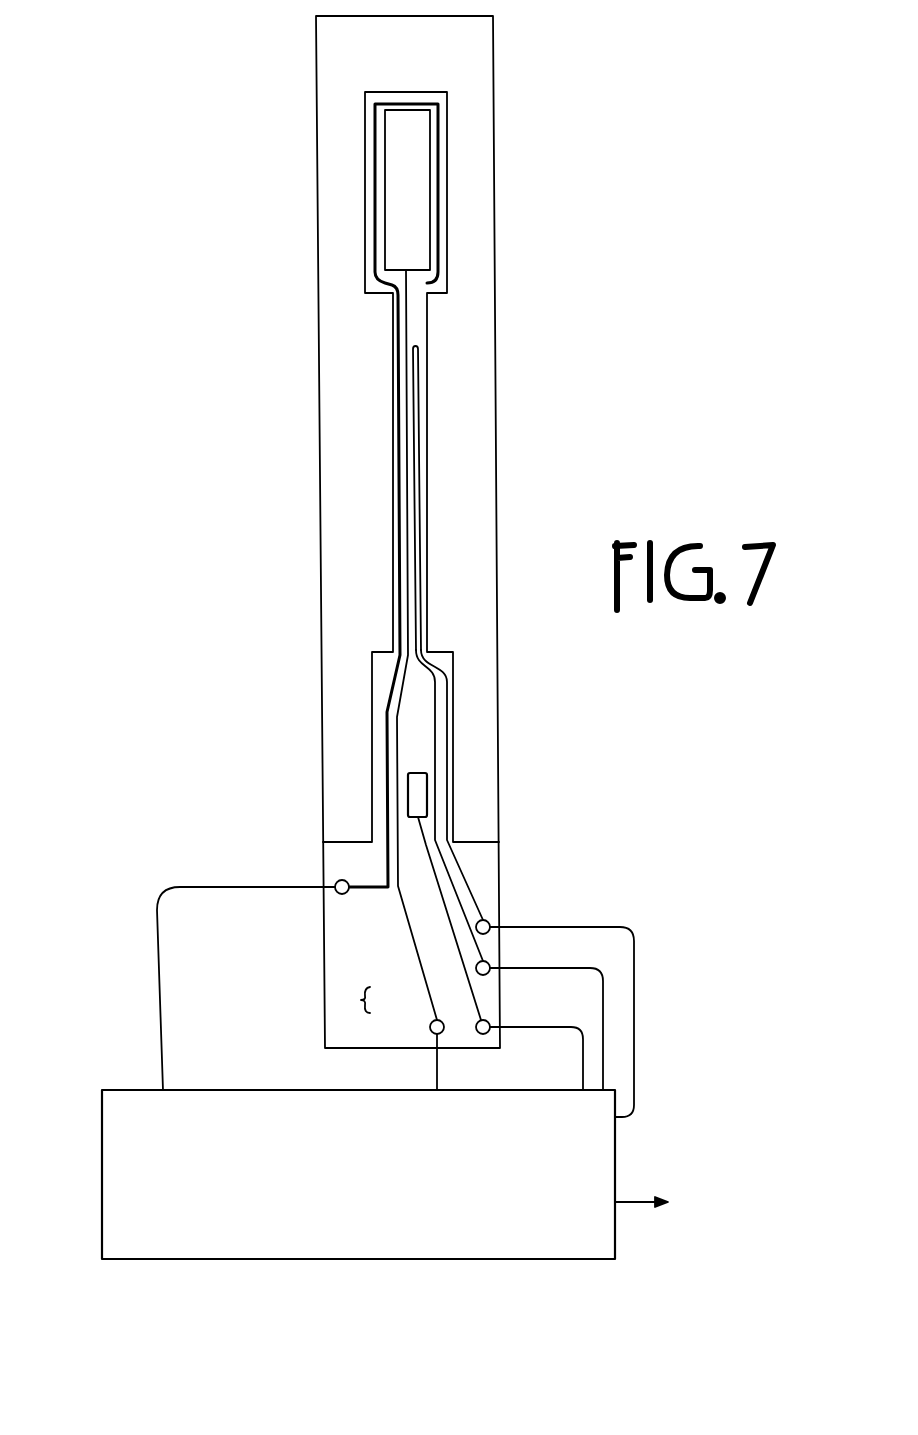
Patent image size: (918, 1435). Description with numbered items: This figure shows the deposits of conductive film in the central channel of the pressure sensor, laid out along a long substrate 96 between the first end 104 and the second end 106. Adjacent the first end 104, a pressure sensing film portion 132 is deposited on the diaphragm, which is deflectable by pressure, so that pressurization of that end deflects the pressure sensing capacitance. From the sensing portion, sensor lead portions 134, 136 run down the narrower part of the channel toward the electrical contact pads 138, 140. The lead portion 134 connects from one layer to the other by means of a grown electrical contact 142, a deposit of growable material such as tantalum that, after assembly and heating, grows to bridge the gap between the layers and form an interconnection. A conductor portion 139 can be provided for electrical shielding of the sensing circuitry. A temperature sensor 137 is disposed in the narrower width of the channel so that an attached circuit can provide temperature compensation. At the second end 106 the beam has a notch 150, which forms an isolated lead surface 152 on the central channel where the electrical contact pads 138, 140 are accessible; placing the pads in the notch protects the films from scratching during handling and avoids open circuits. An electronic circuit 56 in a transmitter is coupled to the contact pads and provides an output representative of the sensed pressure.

The first end 104 is at (357, 532).
The substrate 96 is at (493, 108).
The pressure sensing film portion 132 is at (406, 178).
The sensor lead portion 136 is at (409, 313).
The temperature sensor 137 is at (419, 400).
The grown electrical contact 142 is at (418, 792).
The conductor portion 139 is at (371, 857).
The electrical contact pad 140 is at (487, 965).
The electrical contact pad 138 is at (489, 1037).
The sensor lead portion 134 is at (453, 937).
The notch 150 is at (520, 842).
The isolated lead surface 152 is at (350, 1003).
The second end 106 is at (130, 918).
The electronic circuit 56 is at (330, 1231).